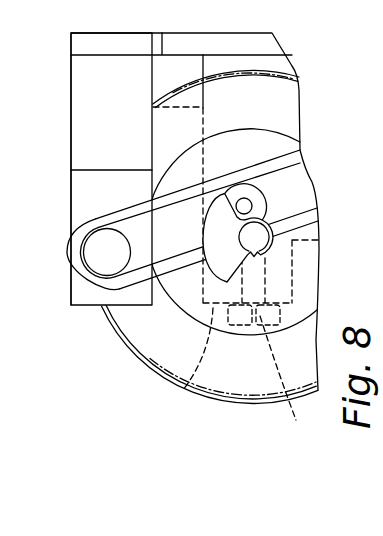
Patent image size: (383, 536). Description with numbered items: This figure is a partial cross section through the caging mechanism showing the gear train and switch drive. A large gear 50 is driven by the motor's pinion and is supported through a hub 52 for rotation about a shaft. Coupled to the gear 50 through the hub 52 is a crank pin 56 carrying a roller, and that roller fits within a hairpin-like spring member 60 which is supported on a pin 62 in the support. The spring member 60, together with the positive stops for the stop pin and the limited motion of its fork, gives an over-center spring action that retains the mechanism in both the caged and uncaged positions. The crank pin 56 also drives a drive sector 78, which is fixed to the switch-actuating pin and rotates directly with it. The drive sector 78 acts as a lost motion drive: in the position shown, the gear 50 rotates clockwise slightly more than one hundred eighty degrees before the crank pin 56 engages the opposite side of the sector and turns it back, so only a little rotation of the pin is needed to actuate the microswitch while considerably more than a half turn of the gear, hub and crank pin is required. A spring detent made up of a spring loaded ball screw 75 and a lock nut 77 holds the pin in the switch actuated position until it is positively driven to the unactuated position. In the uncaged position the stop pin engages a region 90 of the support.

The gear 50 is at (223, 375).
The hub 52 is at (197, 172).
The crank pin 56 is at (243, 198).
The spring member 60 is at (158, 312).
The pin 62 is at (93, 250).
The spring loaded ball screw 75 is at (185, 385).
The lock nut 77 is at (293, 436).
The drive sector 78 is at (222, 268).
The region 90 is at (152, 102).